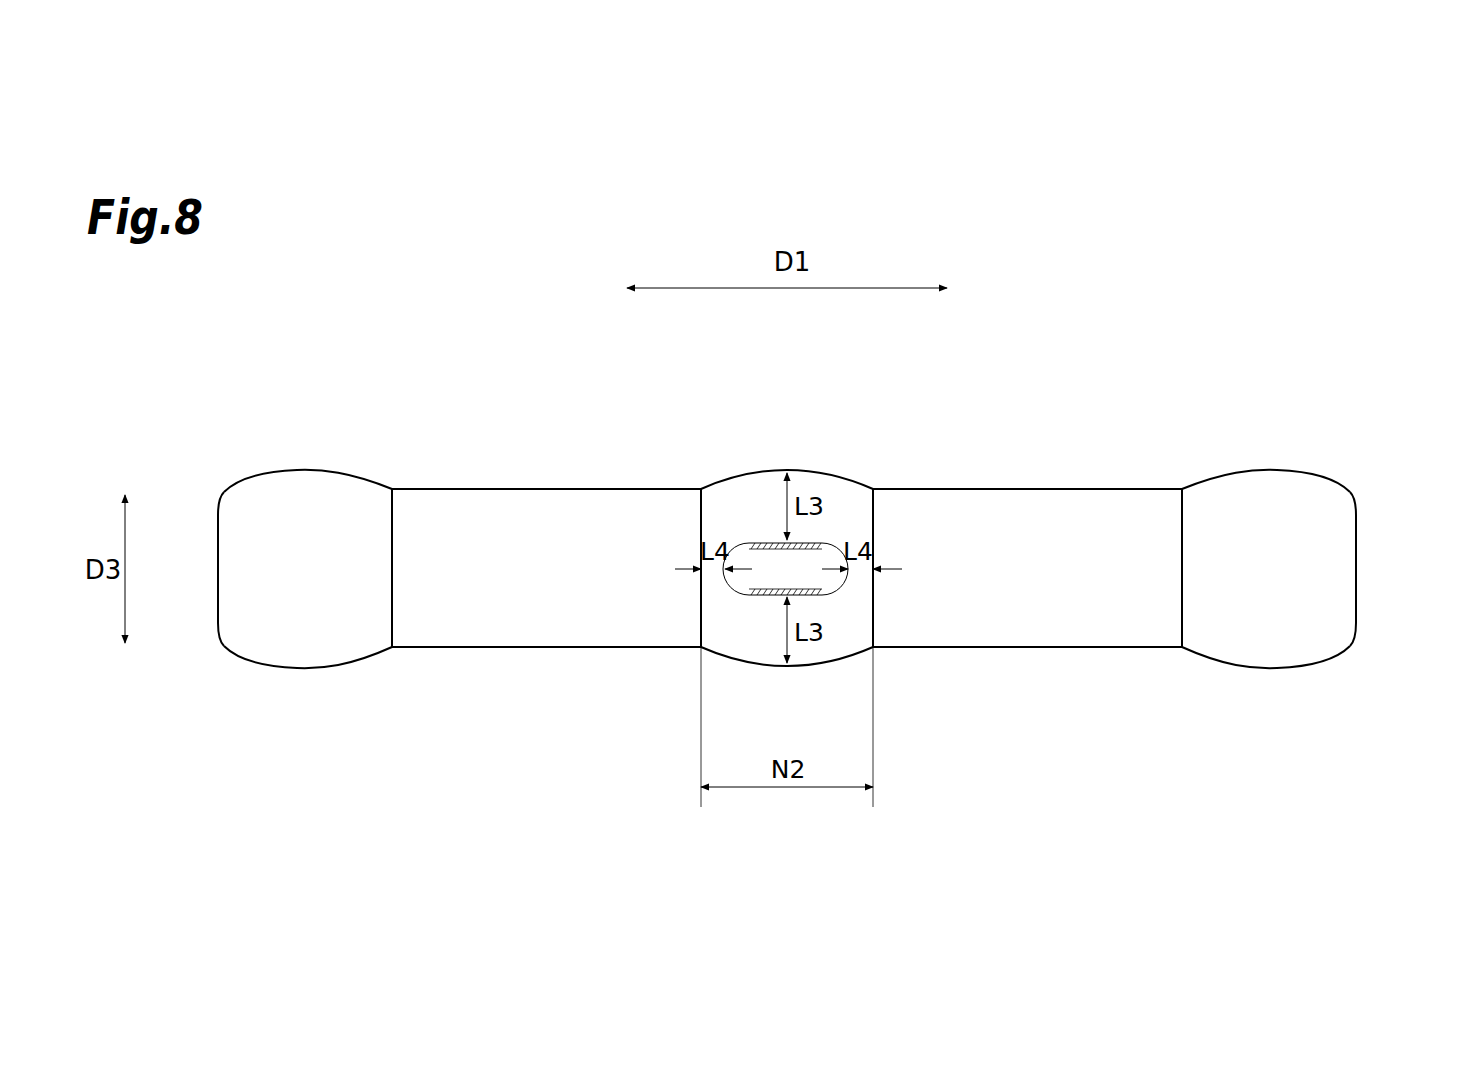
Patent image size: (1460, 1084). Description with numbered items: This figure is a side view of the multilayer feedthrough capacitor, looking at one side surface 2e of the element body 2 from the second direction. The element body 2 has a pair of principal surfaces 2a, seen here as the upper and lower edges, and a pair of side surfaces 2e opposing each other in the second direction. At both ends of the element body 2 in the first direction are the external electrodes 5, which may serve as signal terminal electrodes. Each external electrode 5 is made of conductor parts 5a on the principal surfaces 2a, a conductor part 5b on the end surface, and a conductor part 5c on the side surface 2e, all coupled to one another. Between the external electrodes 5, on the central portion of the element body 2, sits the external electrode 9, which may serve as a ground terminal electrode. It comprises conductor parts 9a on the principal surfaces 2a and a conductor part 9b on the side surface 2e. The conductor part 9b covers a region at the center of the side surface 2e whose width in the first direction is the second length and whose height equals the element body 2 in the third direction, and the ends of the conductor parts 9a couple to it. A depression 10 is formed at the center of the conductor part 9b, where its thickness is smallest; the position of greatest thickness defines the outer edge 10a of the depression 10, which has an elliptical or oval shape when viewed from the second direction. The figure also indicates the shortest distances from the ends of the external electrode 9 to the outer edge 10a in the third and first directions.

The element body 2 is at (787, 551).
The principal surface 2a is at (1094, 487).
The side surface 2e is at (545, 590).
The external electrode 5 is at (802, 547).
The conductor part 5a is at (340, 472).
The conductor part 5b is at (218, 526).
The conductor part 5c is at (280, 598).
The external electrode 9 is at (803, 540).
The conductor part 9a is at (810, 468).
The conductor part 9b is at (737, 505).
The depression 10 is at (854, 627).
The outer edge 10a is at (847, 578).